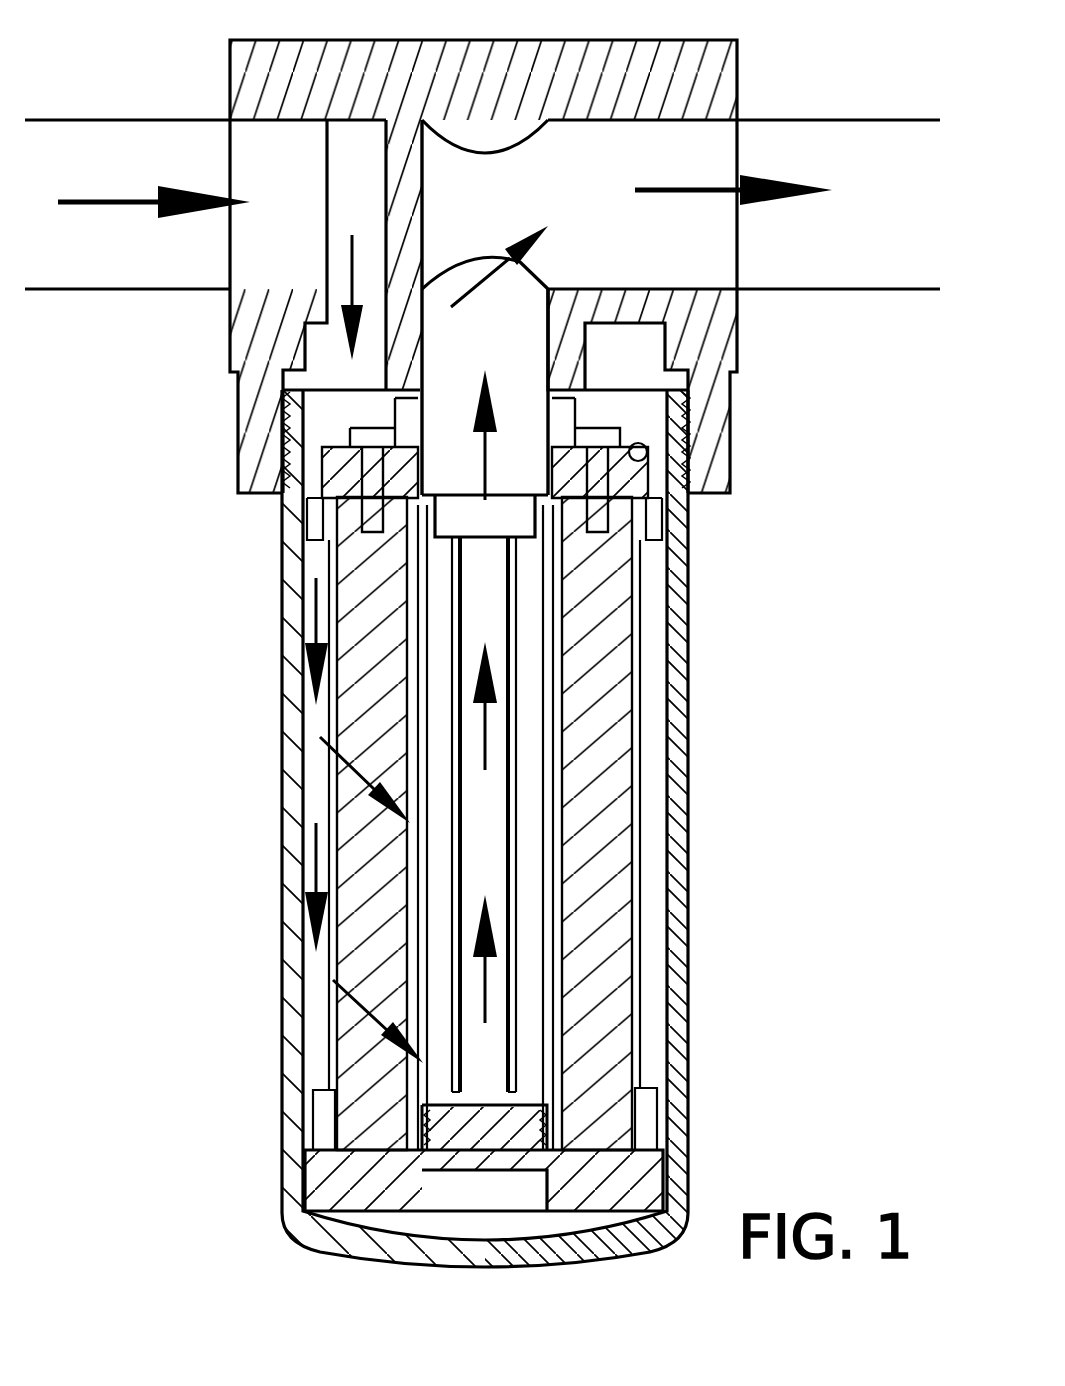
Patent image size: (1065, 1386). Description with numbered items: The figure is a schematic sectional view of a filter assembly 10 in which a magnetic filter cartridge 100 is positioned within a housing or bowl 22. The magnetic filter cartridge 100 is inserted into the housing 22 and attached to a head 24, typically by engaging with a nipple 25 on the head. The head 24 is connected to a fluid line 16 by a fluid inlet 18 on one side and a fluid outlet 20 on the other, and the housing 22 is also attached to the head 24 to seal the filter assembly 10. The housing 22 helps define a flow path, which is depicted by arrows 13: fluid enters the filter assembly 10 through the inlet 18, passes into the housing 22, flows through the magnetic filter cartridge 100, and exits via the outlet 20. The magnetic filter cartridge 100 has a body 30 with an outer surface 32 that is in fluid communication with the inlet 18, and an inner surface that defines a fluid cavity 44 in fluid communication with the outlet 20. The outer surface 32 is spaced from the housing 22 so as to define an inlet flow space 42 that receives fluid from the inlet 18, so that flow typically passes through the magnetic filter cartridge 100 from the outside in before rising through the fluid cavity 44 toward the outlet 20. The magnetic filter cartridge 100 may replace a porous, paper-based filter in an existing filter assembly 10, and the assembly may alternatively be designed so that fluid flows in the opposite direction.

The filter assembly 10 is at (482, 256).
The arrows 13 is at (475, 683).
The fluid line 16 is at (868, 290).
The fluid inlet 18 is at (247, 263).
The fluid outlet 20 is at (710, 273).
The housing or bowl 22 is at (690, 782).
The head 24 is at (230, 343).
The nipple 25 is at (590, 492).
The body 30 is at (643, 915).
The outer surface 32 is at (643, 985).
The inlet flow space 42 is at (657, 638).
The fluid cavity 44 is at (532, 775).
The magnetic filter cartridge 100 is at (570, 774).